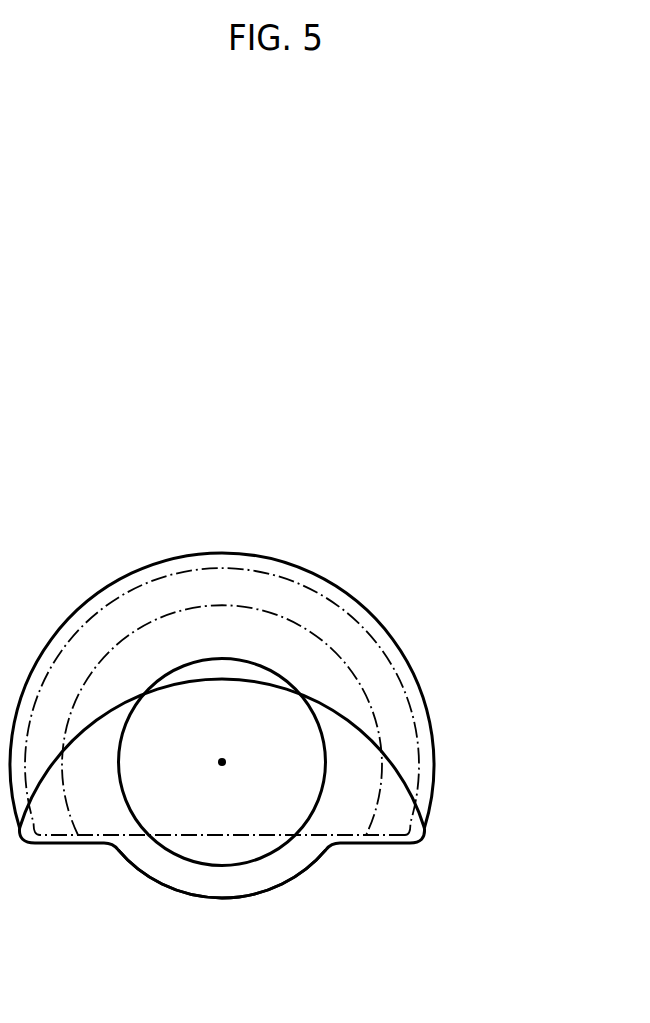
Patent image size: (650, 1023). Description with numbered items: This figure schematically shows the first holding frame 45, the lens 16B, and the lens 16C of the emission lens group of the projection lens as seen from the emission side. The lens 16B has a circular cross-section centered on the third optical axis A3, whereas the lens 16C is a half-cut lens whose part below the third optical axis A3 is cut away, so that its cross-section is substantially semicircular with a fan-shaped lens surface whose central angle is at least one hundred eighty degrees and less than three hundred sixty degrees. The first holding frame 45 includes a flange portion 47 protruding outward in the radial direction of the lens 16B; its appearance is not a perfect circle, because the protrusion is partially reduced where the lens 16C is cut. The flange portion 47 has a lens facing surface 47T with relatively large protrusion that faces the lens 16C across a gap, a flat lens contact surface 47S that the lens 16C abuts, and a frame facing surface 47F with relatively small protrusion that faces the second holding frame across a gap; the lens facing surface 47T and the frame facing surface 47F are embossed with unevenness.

The first holding frame 45 is at (436, 807).
The flange portion 47 is at (433, 757).
The lens facing surface 47T is at (237, 627).
The lens contact surface 47S is at (317, 615).
The frame facing surface 47F is at (203, 880).
The lens 16C is at (408, 703).
The lens 16B is at (272, 857).
The third optical axis A3 is at (222, 760).